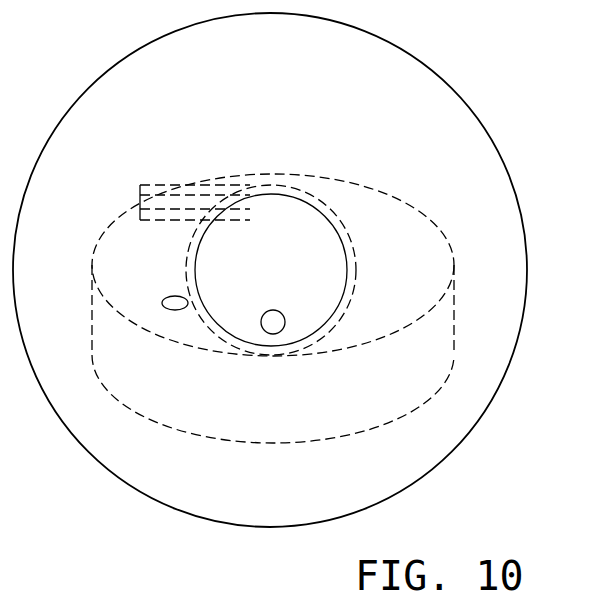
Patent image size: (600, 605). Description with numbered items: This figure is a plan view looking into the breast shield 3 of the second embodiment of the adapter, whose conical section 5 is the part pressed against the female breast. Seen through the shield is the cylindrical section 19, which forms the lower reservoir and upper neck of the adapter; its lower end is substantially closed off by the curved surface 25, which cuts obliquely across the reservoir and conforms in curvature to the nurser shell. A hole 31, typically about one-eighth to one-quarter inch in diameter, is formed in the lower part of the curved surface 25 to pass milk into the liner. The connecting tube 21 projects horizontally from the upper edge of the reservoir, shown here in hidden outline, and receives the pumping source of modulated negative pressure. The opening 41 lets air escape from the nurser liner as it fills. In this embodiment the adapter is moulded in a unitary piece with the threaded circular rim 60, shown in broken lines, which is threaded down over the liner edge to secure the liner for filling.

The breast shield 3 is at (485, 118).
The conical section 5 is at (287, 98).
The cylindrical section 19 is at (355, 260).
The connecting tube 21 is at (162, 187).
The curved surface 25 is at (290, 246).
The hole 31 is at (280, 322).
The opening 41 is at (178, 298).
The threaded circular rim 60 is at (447, 357).